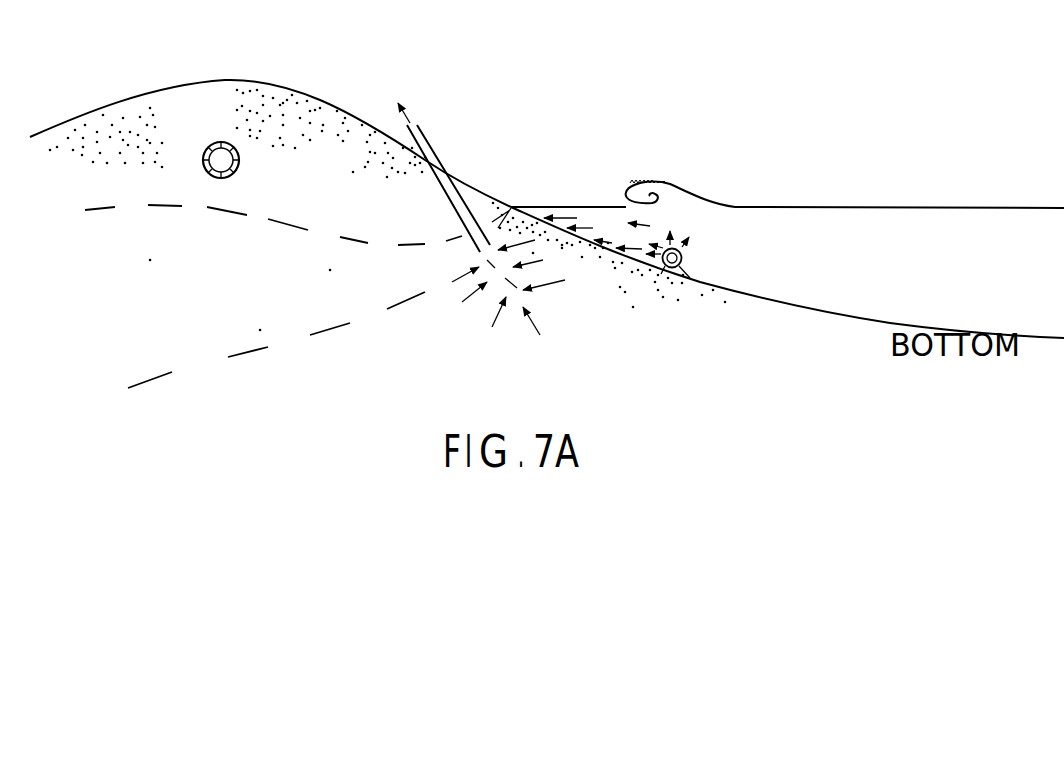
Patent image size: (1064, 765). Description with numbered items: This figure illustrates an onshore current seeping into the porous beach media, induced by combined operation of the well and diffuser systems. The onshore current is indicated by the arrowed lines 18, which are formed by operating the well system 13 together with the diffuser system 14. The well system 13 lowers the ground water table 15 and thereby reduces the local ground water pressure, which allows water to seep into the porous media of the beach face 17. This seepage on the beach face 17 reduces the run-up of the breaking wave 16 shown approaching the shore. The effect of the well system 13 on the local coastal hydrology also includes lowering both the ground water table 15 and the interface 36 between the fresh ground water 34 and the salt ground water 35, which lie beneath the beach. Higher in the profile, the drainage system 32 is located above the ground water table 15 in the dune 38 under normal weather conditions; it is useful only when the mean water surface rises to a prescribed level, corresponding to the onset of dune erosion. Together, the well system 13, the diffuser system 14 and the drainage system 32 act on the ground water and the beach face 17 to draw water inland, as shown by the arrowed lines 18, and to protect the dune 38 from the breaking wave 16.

The well system 13 is at (457, 195).
The diffuser system 14 is at (681, 255).
The ground water table 15 is at (251, 220).
The breaking wave 16 is at (845, 176).
The beach face 17 is at (551, 193).
The arrowed lines 18 is at (551, 270).
The drainage system 32 is at (200, 150).
The fresh ground water 34 is at (240, 295).
The salt ground water 35 is at (731, 301).
The interface 36 is at (255, 351).
The dune 38 is at (270, 126).